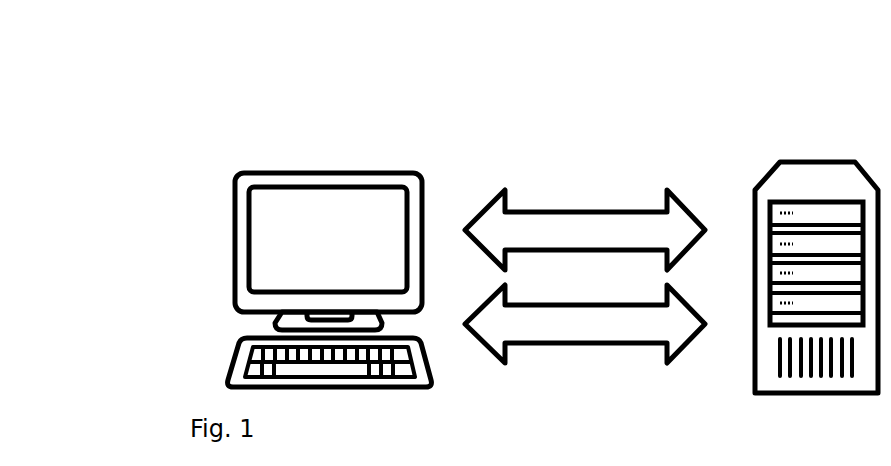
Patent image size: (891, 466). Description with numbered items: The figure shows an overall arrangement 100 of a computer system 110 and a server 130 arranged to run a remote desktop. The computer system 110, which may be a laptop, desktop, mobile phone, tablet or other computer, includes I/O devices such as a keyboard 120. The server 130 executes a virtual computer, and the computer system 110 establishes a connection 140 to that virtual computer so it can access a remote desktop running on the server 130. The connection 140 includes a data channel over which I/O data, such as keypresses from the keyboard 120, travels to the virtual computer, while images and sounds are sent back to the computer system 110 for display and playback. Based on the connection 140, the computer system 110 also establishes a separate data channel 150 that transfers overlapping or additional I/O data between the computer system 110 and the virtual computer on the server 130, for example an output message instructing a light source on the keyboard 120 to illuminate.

The system 100 is at (163, 132).
The computer system 110 is at (279, 172).
The keyboard 120 is at (240, 356).
The server 130 is at (818, 162).
The connection 140 is at (585, 230).
The data channel 150 is at (585, 324).